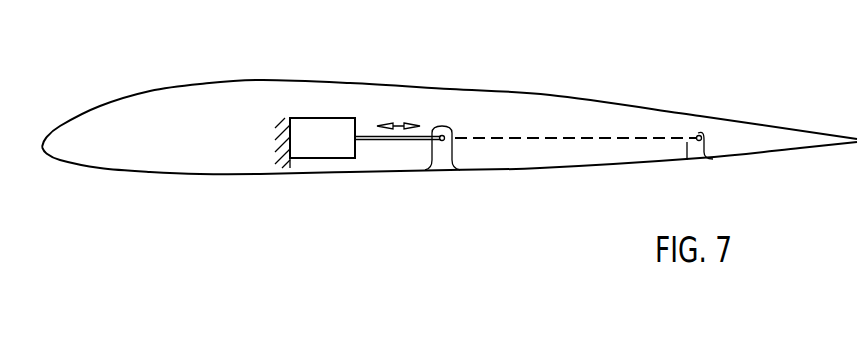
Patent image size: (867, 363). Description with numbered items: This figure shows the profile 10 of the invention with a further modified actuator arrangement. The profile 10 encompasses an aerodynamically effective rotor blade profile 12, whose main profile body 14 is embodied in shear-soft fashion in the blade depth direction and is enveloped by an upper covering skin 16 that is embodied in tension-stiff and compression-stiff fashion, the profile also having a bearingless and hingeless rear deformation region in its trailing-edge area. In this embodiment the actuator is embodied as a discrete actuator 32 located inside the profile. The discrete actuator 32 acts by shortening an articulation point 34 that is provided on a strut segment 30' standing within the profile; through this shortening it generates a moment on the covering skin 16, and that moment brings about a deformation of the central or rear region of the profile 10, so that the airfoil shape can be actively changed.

The profile 10 is at (93, 44).
The rotor blade profile 12 is at (247, 78).
The main profile body 14 is at (140, 88).
The upper covering skin 16 is at (192, 174).
The strut segment 30' is at (569, 180).
The discrete actuator 32 is at (345, 143).
The articulation point 34 is at (448, 127).